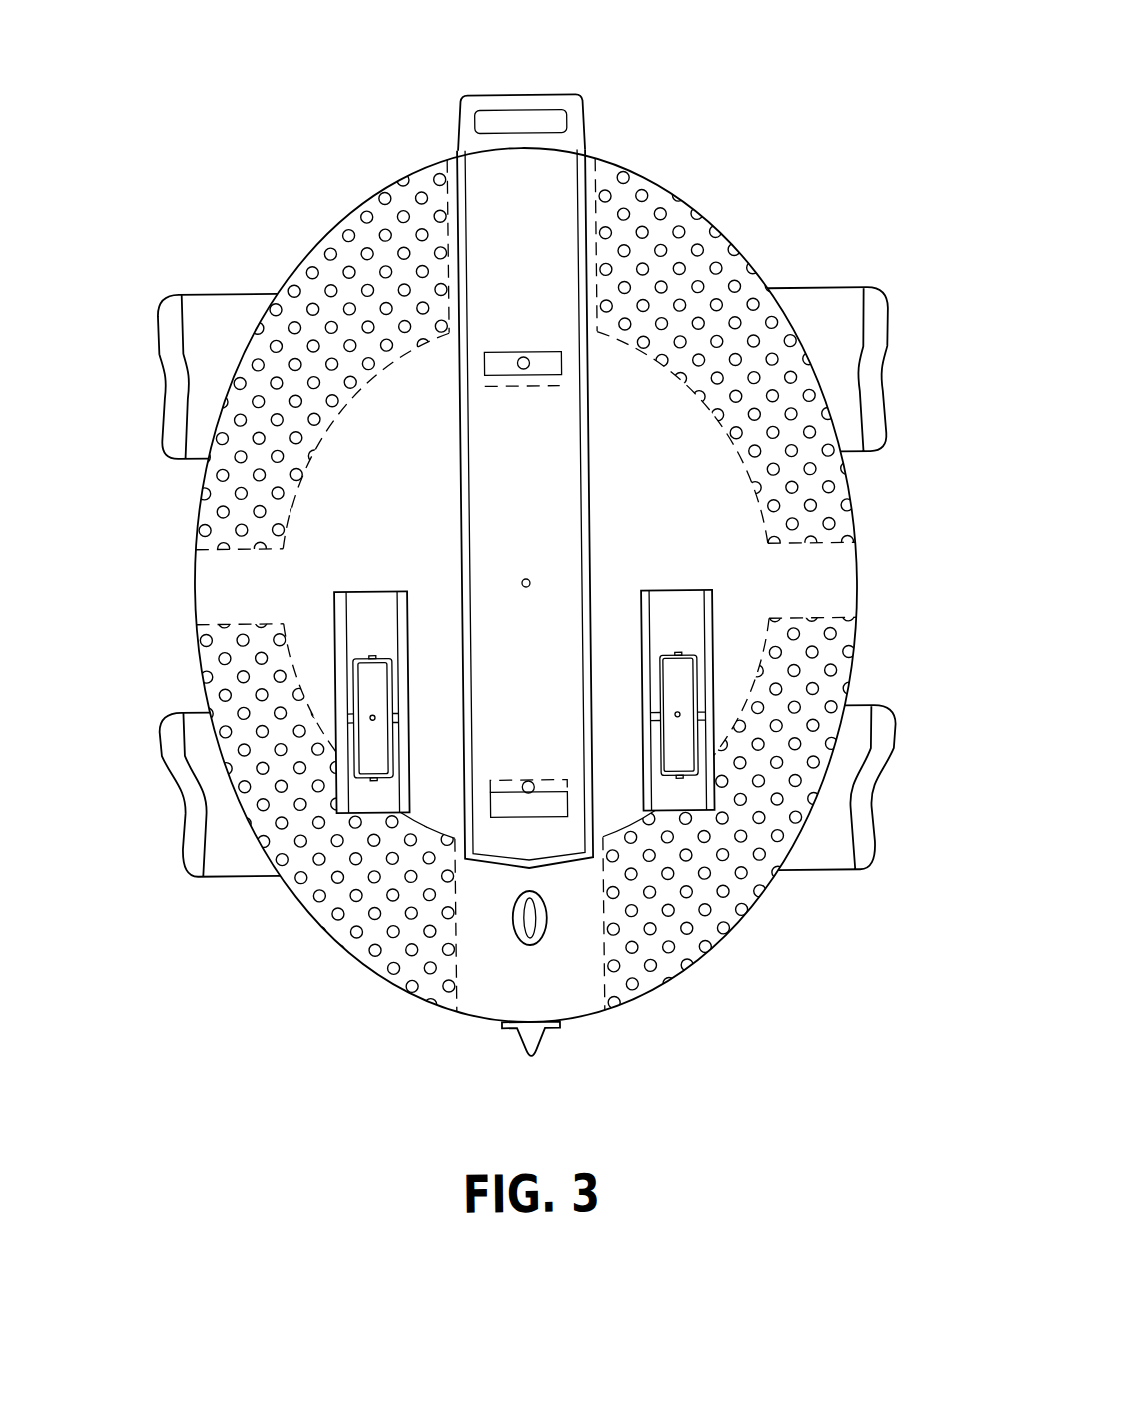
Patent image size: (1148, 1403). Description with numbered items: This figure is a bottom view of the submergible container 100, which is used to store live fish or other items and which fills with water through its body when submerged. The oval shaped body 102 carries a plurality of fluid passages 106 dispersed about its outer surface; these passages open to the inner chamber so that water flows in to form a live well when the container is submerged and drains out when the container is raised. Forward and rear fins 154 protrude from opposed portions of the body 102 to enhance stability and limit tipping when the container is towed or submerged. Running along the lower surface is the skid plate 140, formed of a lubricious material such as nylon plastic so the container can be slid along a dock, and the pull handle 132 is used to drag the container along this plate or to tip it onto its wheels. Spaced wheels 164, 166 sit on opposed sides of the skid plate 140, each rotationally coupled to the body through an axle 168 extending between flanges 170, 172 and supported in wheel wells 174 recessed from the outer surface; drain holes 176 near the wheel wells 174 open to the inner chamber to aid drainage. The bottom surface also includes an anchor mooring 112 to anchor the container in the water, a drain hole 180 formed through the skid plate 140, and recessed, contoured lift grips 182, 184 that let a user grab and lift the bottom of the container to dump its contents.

The submergible container 100 is at (690, 100).
The body 102 is at (858, 566).
The fluid passages 106 is at (716, 227).
The mooring 112 is at (505, 925).
The pull handle 132 is at (523, 85).
The skid plate 140 is at (548, 478).
The fins 154 is at (213, 283).
The wheel 164 is at (383, 676).
The wheel 166 is at (680, 668).
The axle 168 is at (391, 707).
The flange 170 is at (335, 639).
The flange 172 is at (409, 760).
The wheel wells 174 is at (391, 770).
The drain holes 176 is at (371, 716).
The drain hole 180 is at (527, 579).
The lift grip 182 is at (497, 352).
The lift grip 184 is at (545, 779).